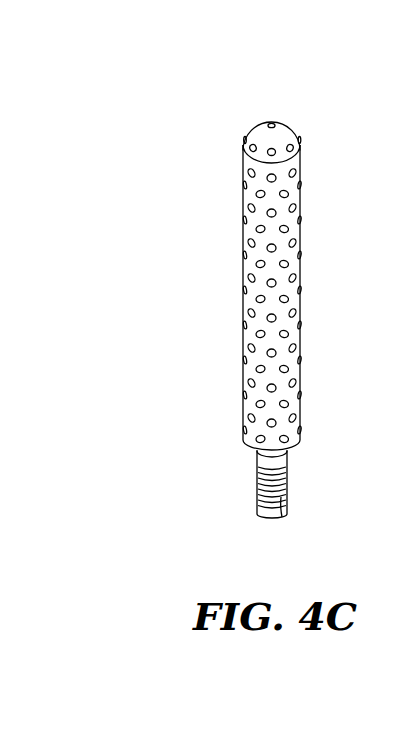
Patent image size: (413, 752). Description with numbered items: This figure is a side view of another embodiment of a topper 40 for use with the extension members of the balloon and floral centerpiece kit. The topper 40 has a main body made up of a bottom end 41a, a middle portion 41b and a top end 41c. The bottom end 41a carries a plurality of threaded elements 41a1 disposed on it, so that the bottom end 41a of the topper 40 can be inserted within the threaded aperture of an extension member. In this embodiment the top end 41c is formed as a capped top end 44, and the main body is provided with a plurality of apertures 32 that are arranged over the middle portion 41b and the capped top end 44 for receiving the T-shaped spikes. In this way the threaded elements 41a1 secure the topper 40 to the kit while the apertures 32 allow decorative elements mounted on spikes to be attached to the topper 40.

The topper 40 is at (158, 111).
The capped top end 44 is at (289, 132).
The top end 41c is at (243, 158).
The middle portion 41b is at (235, 284).
The apertures 32 is at (274, 249).
The bottom end 41a is at (258, 511).
The threaded elements 41a1 is at (289, 511).